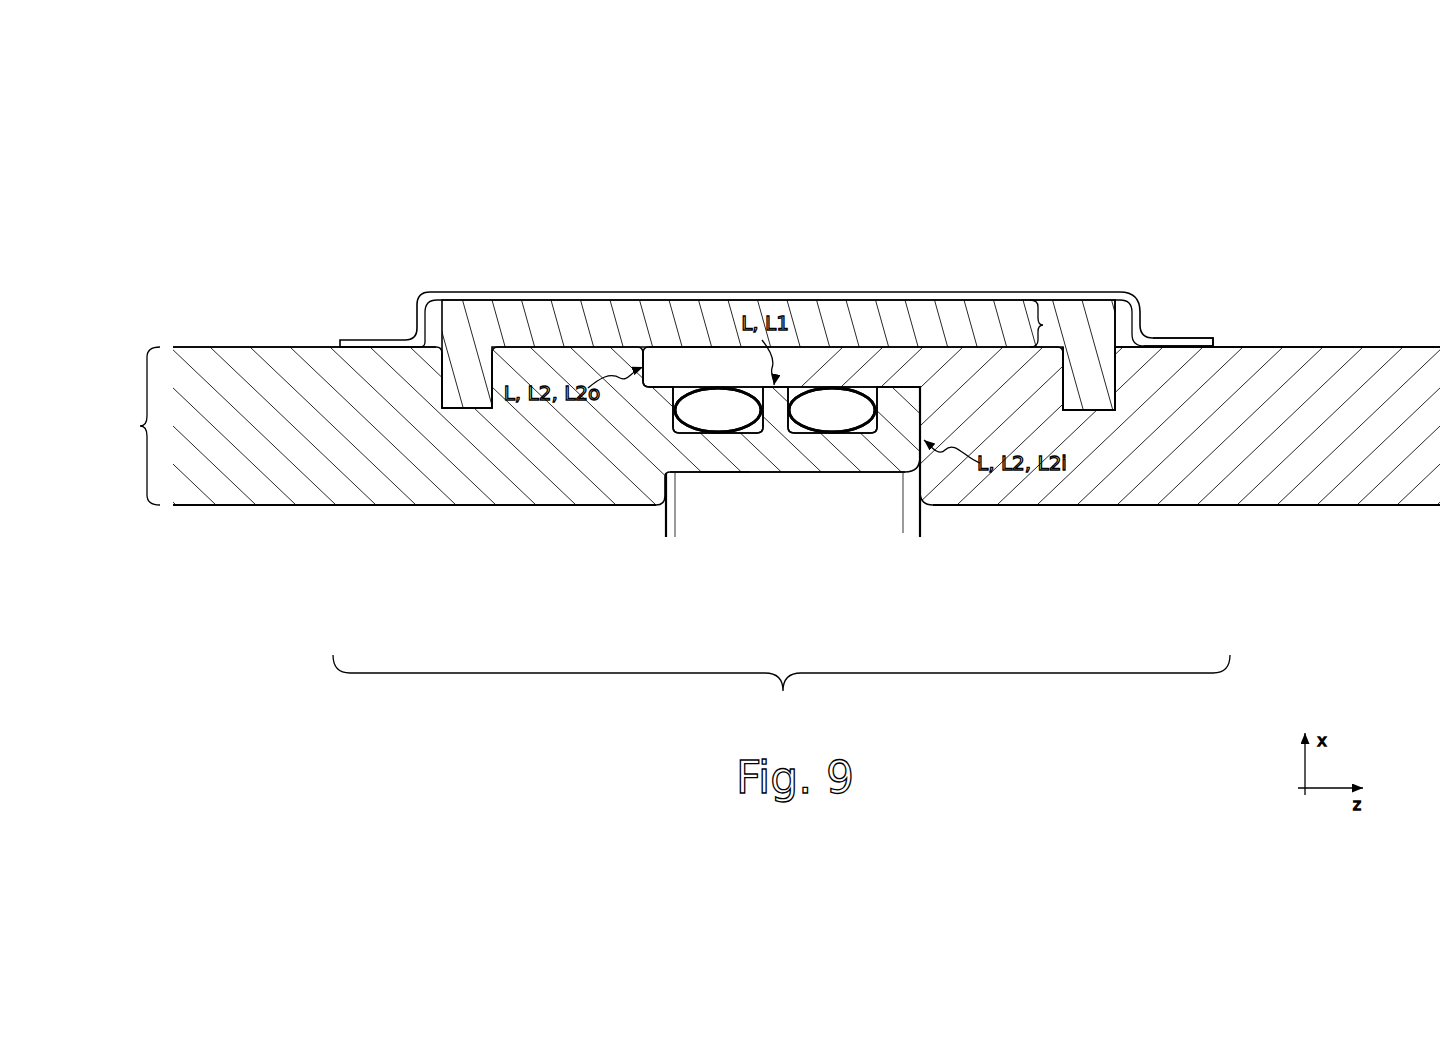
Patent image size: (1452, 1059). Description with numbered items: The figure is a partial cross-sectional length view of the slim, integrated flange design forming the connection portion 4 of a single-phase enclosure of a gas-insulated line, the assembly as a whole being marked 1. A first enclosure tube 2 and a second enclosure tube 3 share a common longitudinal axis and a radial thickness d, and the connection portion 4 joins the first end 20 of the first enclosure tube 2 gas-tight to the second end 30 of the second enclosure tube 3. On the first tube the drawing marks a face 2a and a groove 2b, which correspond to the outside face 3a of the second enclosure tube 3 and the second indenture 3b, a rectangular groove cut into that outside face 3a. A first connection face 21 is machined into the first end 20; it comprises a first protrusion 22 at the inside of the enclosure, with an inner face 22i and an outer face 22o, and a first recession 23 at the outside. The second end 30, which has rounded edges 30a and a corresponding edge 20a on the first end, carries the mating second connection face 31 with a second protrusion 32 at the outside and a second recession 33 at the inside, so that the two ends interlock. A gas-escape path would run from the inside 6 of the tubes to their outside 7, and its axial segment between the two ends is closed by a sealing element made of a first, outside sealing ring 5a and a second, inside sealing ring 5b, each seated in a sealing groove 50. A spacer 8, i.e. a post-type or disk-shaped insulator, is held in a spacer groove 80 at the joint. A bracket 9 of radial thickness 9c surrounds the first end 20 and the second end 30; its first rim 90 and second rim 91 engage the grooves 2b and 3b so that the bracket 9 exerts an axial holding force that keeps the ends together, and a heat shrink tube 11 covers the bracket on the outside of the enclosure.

The sealing arrangement 1 is at (291, 286).
The first enclosure tube 2 is at (270, 487).
The first component outer surface 2a is at (200, 346).
The first groove 2b is at (463, 413).
The second enclosure tube 3 is at (1315, 483).
The outside face of second enclosure tube 3a is at (1345, 346).
The second indenture 3b is at (1090, 416).
The connection portion 4 is at (781, 691).
The first sealing ring 5a is at (718, 402).
The second sealing ring 5b is at (831, 402).
The inside of the enclosure tubes 6 is at (1430, 541).
The outside of the enclosure tubes 7 is at (1420, 331).
The spacer 8 is at (675, 538).
The bracket 9 is at (599, 333).
The thickness of bracket 9c is at (1043, 325).
The heat shrink tube 11 is at (1190, 337).
The first end of first enclosure tube 20 is at (357, 508).
The first end face 20a is at (659, 508).
The first connection face 21 is at (907, 400).
The first protrusion 22 is at (698, 450).
The outer face of first protrusion 22o is at (776, 384).
The inner face of first protrusion 22i is at (823, 473).
The first recession 23 is at (647, 366).
The second end of second enclosure tube 30 is at (1156, 508).
The rounded edges 30a is at (926, 506).
The second connection face 31 is at (915, 382).
The second protrusion 32 is at (688, 367).
The second recession 33 is at (885, 400).
The sealing groove 50 is at (755, 436).
The spacer groove 80 is at (723, 474).
The first rim of bracket 90 is at (471, 392).
The second rim of bracket 91 is at (1088, 393).
The radial thickness of the enclosure tubes d is at (131, 426).